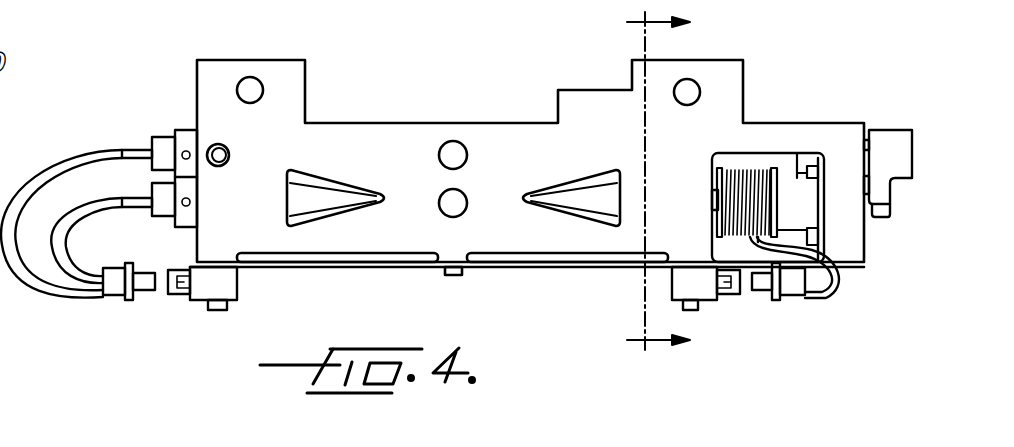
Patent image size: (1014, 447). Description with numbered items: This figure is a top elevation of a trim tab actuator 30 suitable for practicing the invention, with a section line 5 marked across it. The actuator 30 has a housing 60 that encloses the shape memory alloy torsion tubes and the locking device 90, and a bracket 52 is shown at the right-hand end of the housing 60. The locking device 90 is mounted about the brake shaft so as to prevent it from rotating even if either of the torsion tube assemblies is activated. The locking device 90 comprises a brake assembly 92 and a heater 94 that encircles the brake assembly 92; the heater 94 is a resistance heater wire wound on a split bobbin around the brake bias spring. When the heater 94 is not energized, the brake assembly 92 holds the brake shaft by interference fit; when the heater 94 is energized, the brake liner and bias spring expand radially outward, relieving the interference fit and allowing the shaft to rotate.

The actuator 30 is at (391, 88).
The housing 60 is at (503, 137).
The locking device 90 is at (754, 150).
The brake assembly 92 is at (790, 178).
The heater 94 is at (727, 155).
The bracket 52 is at (900, 148).
The section line 5- 5 is at (642, 181).